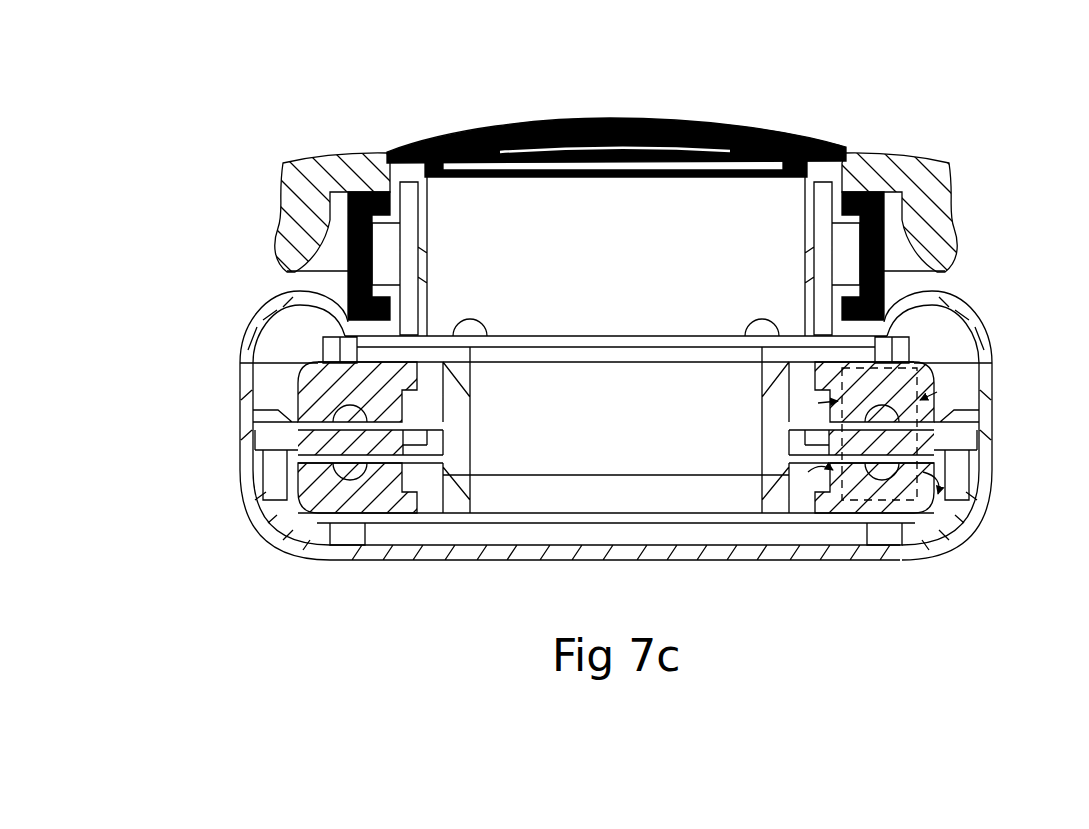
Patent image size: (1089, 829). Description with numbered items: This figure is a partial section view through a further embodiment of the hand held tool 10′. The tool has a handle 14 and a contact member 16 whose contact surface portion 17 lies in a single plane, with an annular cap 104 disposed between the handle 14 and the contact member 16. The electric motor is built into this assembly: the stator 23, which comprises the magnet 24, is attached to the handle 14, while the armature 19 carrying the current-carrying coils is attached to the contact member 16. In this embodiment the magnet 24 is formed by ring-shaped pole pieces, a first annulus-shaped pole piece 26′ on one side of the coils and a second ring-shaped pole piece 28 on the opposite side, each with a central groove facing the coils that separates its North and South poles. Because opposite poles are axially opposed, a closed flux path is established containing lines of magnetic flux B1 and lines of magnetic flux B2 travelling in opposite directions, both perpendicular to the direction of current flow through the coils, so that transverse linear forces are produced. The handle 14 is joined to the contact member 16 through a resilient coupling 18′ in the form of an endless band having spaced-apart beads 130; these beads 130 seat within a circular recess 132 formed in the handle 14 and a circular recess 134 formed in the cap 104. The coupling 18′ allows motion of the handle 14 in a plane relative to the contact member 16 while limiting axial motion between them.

The tool 10′ is at (838, 123).
The handle 14 is at (947, 170).
The contact member 16 is at (997, 463).
The contact surface portion 17 is at (383, 560).
The resilient coupling 18′ is at (890, 247).
The armature 19 is at (307, 447).
The stator 23 is at (287, 378).
The magnet 24 is at (963, 387).
The first ring-shaped pole piece 26′ is at (965, 350).
The set of poles 28 is at (920, 530).
The cap 104 is at (938, 350).
The beads 130 is at (850, 207).
The circular recess 132 is at (805, 198).
The circular recess 134 is at (840, 305).
The lines of magnetic flux B1 is at (978, 372).
The lines of magnetic flux B2 is at (840, 477).